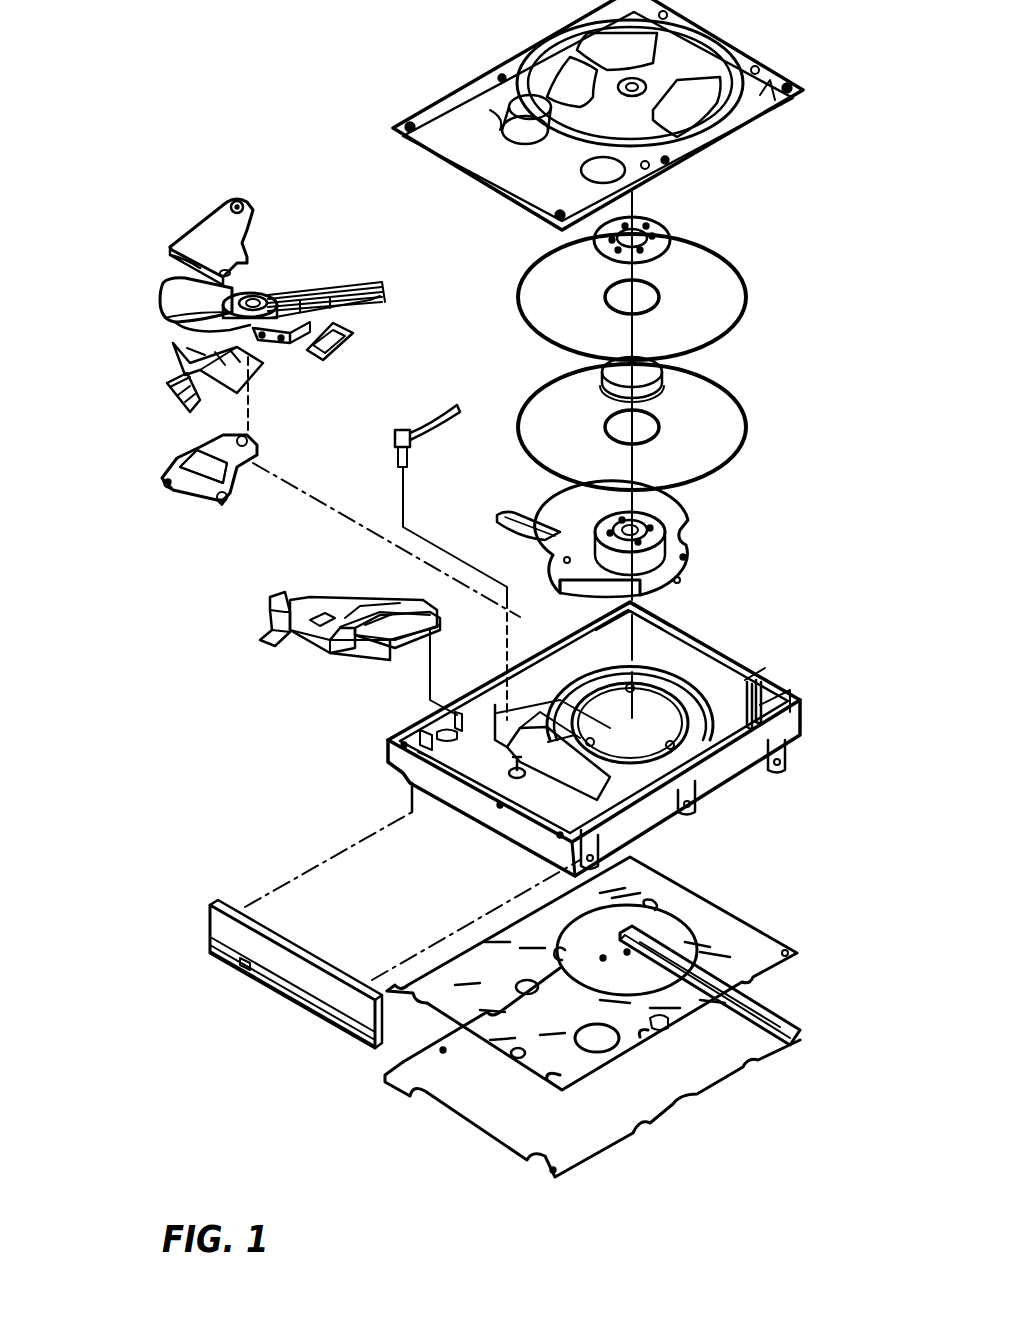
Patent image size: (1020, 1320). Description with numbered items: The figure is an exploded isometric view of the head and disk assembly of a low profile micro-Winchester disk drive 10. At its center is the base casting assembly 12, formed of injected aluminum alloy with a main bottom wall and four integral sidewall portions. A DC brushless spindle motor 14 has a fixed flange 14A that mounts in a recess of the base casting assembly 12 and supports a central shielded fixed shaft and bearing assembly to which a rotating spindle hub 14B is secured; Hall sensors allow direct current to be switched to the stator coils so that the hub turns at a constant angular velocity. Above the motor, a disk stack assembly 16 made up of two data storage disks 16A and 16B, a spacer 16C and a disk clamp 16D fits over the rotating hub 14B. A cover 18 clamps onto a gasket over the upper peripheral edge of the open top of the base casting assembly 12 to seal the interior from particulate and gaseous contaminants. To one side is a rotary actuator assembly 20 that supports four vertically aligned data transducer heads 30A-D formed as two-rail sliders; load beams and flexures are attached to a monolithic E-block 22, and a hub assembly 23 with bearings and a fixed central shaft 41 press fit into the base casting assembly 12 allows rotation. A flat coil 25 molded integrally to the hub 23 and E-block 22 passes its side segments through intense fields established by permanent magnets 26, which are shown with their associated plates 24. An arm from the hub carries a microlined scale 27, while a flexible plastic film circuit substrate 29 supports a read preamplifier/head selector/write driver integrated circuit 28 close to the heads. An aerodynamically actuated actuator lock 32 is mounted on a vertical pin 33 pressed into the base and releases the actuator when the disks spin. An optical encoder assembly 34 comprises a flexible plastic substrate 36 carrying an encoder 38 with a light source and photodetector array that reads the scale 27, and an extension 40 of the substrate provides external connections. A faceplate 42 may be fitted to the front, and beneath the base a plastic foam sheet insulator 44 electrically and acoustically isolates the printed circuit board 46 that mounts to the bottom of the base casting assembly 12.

The disk drive 10 is at (241, 1081).
The base casting assembly 12 is at (598, 739).
The DC brushless spindle motor 14 is at (653, 556).
The fixed flange 14A is at (688, 580).
The rotating spindle hub 14B is at (668, 527).
The disk stack assembly 16 is at (887, 352).
The data storage disk 16A is at (735, 425).
The data storage disk 16B is at (725, 282).
The spacer 16C is at (670, 378).
The disk clamp 16D is at (662, 222).
The cover 18 is at (725, 38).
The rotary actuator assembly 20 is at (97, 164).
The monolithic E-block 22 is at (310, 298).
The hub assembly 23 is at (260, 295).
The magnet plates 24 is at (218, 205).
The flat coil 25 is at (170, 290).
The permanent magnets 26 is at (170, 498).
The microlined scale 27 is at (350, 334).
The read preamplifier/head selector/write driver integrated circuit 28 is at (180, 360).
The flexible plastic film circuit substrate 29 is at (170, 400).
The data transducer heads 30A-D is at (383, 287).
The aerodynamically actuated actuator lock 32 is at (425, 410).
The vertical pin 33 is at (500, 700).
The optical encoder assembly 34 is at (315, 655).
The flexible plastic substrate 36 is at (352, 608).
The encoder 38 is at (397, 630).
The extension 40 is at (262, 610).
The fixed central shaft 41 is at (520, 757).
The faceplate 42 is at (272, 1002).
The plastic foam sheet insulator 44 is at (718, 905).
The printed circuit board 46 is at (718, 1090).